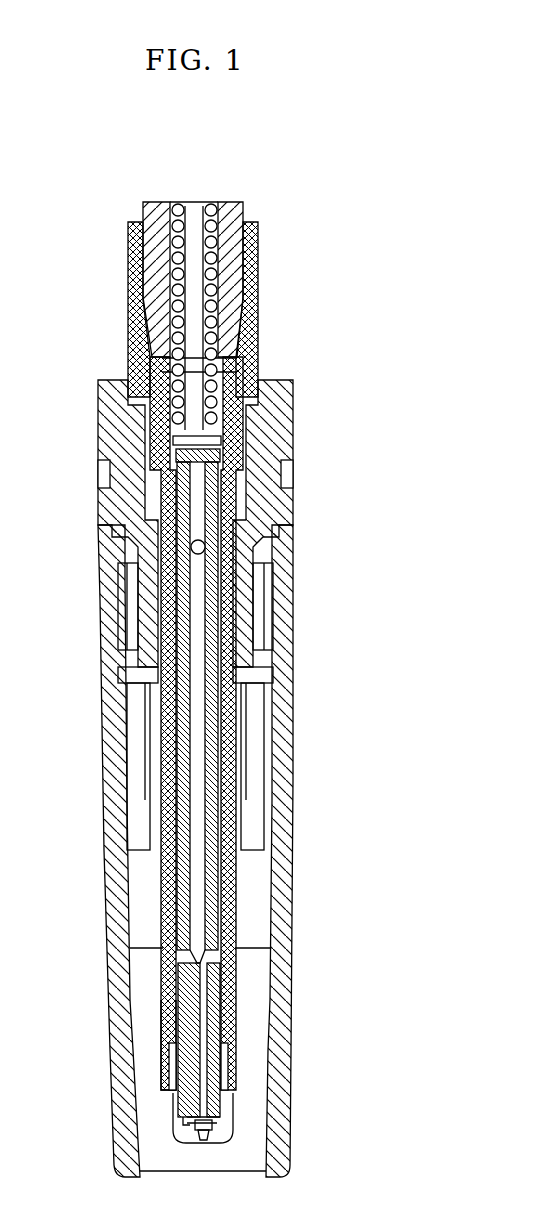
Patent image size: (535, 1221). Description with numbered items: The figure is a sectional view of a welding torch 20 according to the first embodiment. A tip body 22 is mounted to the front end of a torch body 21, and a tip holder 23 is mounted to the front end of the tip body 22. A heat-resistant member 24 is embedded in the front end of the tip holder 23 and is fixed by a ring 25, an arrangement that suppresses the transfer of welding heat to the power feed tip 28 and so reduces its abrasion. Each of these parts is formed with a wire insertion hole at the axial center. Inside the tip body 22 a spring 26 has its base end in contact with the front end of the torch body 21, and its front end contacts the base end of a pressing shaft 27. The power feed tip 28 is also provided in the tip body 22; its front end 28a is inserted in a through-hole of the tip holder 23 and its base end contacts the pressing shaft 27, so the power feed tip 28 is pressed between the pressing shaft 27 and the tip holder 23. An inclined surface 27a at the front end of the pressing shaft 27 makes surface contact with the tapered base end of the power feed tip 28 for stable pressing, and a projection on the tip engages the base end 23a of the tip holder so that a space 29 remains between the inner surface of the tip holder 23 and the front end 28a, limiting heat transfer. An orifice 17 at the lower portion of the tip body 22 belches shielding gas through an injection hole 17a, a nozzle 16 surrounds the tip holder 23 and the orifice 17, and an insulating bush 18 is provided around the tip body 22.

The nozzle 16 is at (287, 875).
The orifice 17 is at (255, 693).
The injection hole 17a is at (248, 768).
The insulating bush 18 is at (273, 451).
The welding torch 20 is at (239, 666).
The torch body 21 is at (233, 235).
The tip body 22 is at (253, 337).
The tip holder 23 is at (230, 1102).
The base end of the tip holder 23a is at (237, 1053).
The heat-resistant member 24 is at (230, 1130).
The ring 25 is at (197, 1123).
The spring 26 is at (193, 422).
The pressing shaft 27 is at (213, 538).
The inclined surface 27a is at (238, 943).
The power feed tip 28 is at (235, 980).
The front end of the power feed tip 28a is at (230, 1110).
The space 29 is at (193, 1120).